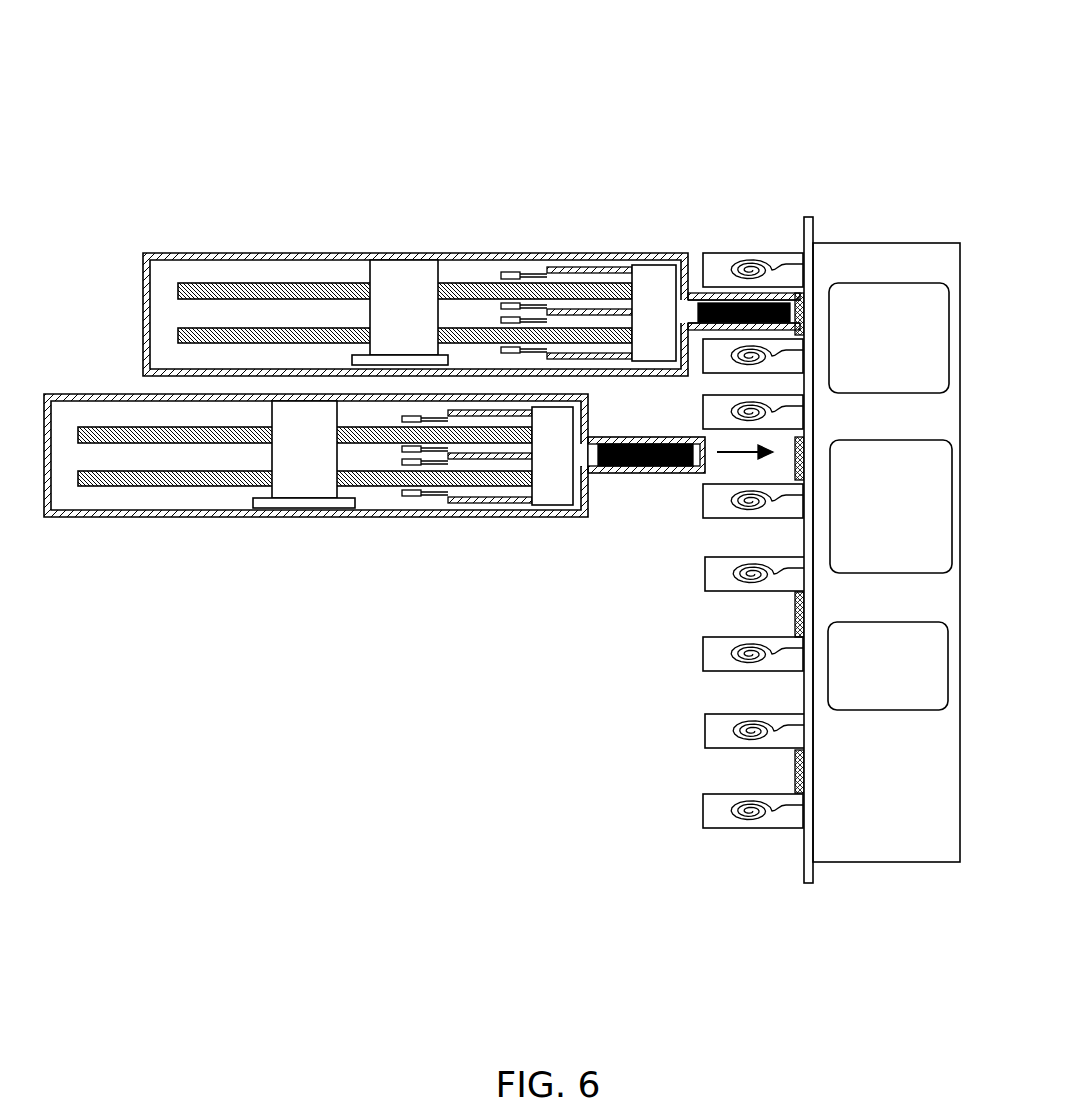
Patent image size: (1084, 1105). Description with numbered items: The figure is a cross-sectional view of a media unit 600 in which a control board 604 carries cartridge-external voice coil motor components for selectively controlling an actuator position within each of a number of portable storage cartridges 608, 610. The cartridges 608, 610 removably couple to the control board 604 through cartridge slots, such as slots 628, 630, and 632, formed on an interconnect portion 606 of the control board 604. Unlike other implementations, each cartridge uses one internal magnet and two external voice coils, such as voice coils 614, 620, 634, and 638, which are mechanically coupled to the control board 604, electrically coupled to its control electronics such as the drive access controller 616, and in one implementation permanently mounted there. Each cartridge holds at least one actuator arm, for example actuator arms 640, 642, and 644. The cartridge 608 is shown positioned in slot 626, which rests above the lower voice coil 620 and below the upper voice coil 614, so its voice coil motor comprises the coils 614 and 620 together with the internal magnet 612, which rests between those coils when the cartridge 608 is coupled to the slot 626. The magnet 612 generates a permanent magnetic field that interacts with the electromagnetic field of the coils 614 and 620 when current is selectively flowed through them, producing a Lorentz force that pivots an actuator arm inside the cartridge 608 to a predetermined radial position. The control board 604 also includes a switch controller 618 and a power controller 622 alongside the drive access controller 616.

The media unit 600 is at (205, 107).
The control board 604 is at (835, 243).
The interconnect portion 606 is at (812, 218).
The portable storage cartridge 608 is at (143, 312).
The portable storage cartridge 610 is at (136, 394).
The internal magnet 612 is at (740, 311).
The upper voice coil 614 is at (750, 266).
The drive access controller 616 is at (891, 506).
The switch controller 618 is at (888, 666).
The lower voice coil 620 is at (728, 368).
The power controller 622 is at (889, 338).
The slot 626 is at (812, 298).
The cartridge slot 628 is at (812, 441).
The cartridge slot 630 is at (795, 615).
The cartridge slot 632 is at (795, 766).
The voice coil 634 is at (735, 414).
The voice coil 638 is at (735, 506).
The actuator arm 640 is at (595, 266).
The actuator arm 642 is at (555, 308).
The actuator arm 644 is at (580, 356).